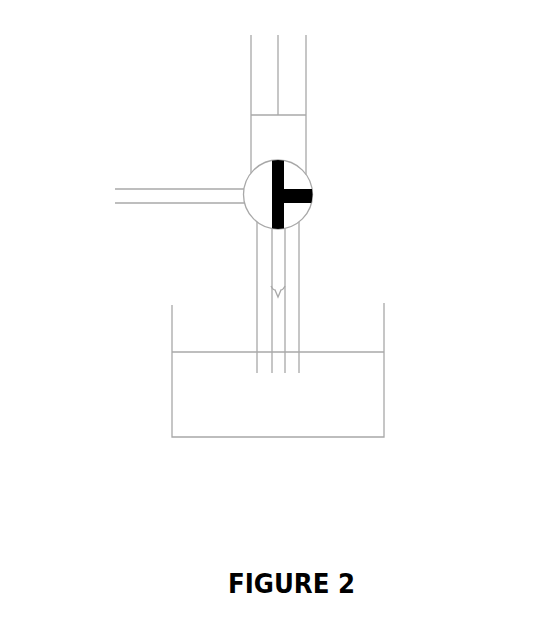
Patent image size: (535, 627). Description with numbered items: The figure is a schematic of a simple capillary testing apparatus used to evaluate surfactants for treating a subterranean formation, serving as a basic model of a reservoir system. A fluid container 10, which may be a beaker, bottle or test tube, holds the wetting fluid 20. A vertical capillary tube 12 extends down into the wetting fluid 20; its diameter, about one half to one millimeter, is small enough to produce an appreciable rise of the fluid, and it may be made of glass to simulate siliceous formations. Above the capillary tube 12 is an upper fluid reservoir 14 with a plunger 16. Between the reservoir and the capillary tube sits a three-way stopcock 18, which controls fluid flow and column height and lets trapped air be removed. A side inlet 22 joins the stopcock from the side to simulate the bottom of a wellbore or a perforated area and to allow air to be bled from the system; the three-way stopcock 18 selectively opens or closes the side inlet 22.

The fluid container 10 is at (384, 303).
The capillary tube 12 is at (297, 258).
The upper fluid reservoir 14 is at (285, 115).
The plunger 16 is at (278, 95).
The three-way stopcock 18 is at (305, 172).
The wetting fluid 20 is at (217, 352).
The side inlet 22 is at (168, 190).